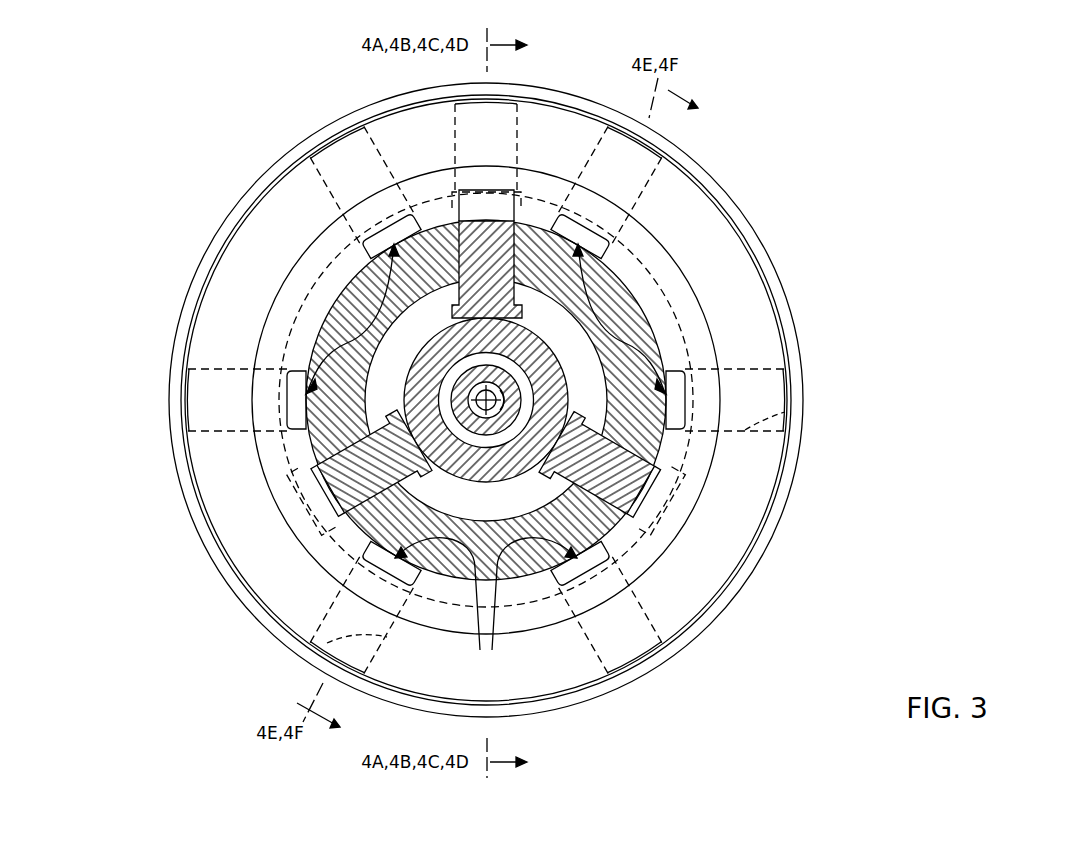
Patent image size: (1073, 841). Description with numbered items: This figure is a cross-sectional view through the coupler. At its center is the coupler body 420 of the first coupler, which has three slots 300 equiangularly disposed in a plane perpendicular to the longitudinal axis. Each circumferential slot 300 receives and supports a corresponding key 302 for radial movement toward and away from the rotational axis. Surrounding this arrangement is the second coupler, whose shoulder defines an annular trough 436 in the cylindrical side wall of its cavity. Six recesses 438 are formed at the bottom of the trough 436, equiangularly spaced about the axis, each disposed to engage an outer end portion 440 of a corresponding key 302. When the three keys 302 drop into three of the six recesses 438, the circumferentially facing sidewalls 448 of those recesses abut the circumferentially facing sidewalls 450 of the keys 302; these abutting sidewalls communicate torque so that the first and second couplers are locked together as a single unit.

The slot 300 is at (472, 246).
The key 302 is at (477, 288).
The coupler body 420 is at (806, 412).
The trough 436 is at (413, 612).
The recess 438 is at (343, 350).
The outer end portion 440 is at (405, 88).
The circumferentially facing sidewall 448 is at (336, 138).
The circumferentially facing sidewall 450 is at (433, 190).